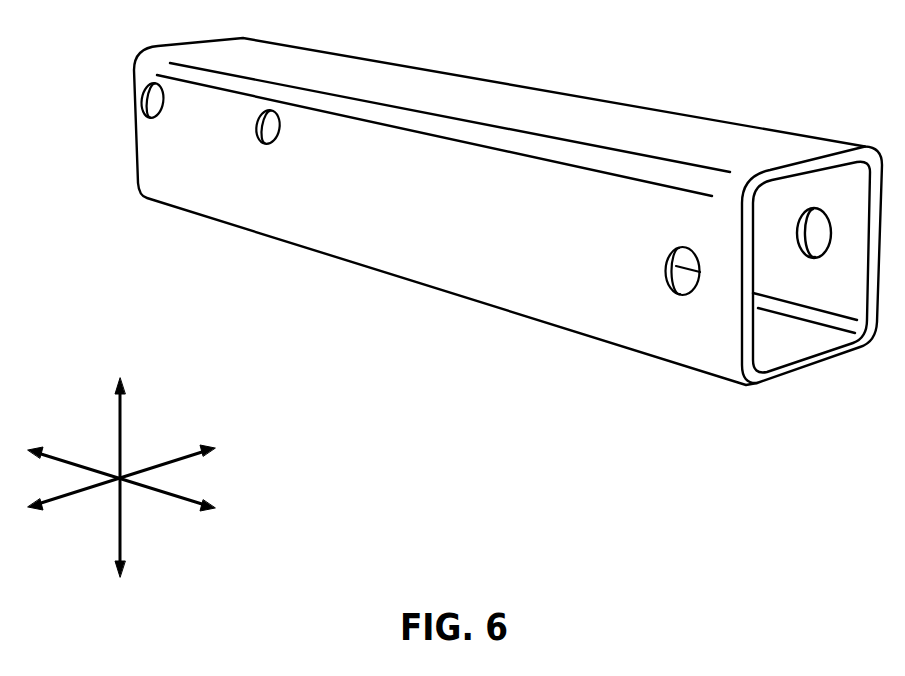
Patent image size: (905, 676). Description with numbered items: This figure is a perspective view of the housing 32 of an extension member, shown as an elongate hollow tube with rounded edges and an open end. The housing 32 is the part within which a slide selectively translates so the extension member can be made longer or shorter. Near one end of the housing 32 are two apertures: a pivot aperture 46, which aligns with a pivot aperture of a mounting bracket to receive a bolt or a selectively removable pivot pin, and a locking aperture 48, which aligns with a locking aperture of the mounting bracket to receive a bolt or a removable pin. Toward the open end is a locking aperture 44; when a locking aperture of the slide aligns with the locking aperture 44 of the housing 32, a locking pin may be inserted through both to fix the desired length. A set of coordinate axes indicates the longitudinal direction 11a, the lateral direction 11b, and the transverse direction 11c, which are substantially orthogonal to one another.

The housing 32 is at (437, 274).
The locking aperture 44 is at (667, 287).
The pivot aperture 46 is at (143, 100).
The locking aperture 48 is at (263, 141).
The longitudinal direction 11a is at (172, 497).
The lateral direction 11b is at (187, 457).
The transverse direction 11c is at (123, 430).